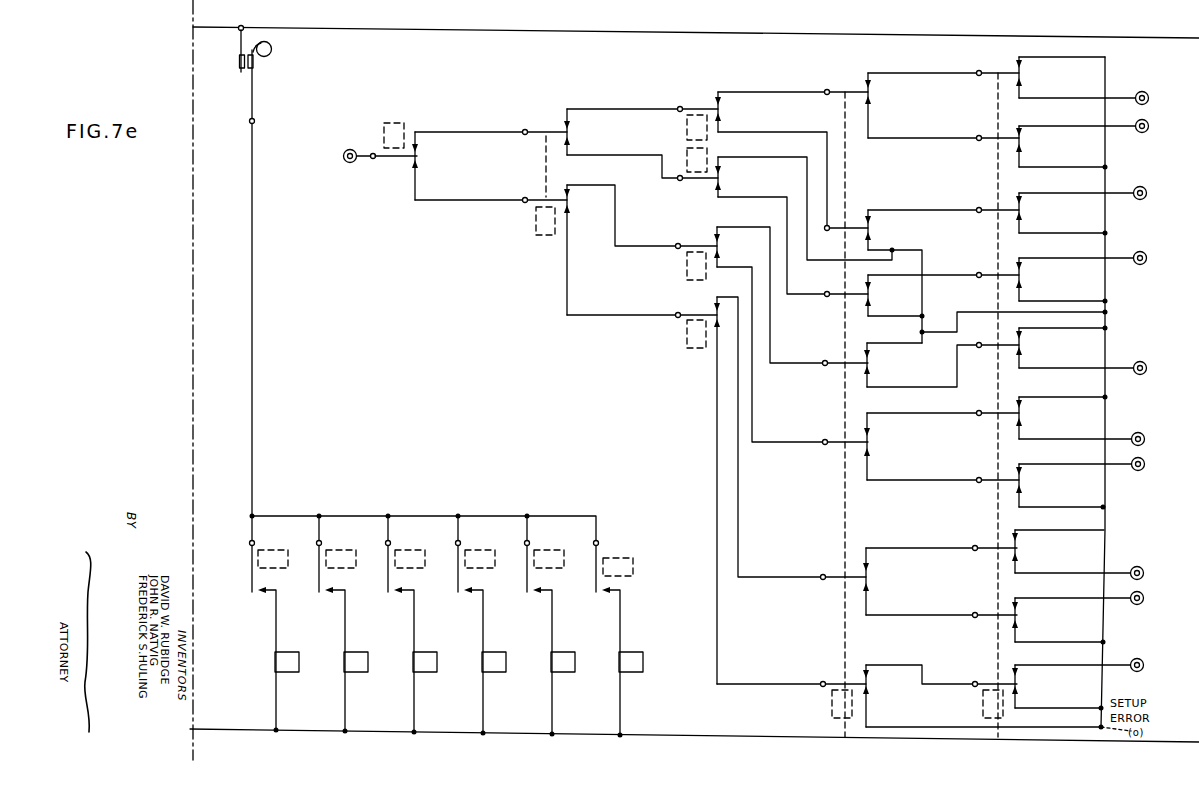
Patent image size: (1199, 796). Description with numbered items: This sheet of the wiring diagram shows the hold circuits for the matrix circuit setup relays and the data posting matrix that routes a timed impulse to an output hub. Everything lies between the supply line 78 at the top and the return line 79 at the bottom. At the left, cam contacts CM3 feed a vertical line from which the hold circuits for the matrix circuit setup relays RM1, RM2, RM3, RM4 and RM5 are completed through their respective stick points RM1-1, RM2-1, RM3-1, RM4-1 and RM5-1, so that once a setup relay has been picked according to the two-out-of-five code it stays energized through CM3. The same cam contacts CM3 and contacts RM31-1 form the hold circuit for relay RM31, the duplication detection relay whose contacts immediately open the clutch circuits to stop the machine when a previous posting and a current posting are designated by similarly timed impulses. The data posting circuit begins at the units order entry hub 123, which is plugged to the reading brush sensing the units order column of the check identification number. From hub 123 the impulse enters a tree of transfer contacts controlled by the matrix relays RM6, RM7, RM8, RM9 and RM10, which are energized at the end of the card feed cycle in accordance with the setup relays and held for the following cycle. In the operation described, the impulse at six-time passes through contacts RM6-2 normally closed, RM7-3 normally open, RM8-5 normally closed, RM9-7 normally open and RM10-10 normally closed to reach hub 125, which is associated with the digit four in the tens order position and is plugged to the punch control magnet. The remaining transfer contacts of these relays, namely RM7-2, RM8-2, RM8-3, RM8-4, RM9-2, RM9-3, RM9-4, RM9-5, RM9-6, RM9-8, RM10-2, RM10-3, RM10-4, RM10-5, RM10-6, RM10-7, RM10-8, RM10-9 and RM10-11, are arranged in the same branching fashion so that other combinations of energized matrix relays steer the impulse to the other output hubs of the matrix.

The line 78 is at (500, 29).
The line 79 is at (712, 734).
The units order entry hub 123 is at (344, 163).
The hub 125 is at (1144, 594).
The cam contacts CM3 is at (248, 71).
The matrix circuit setup relay RM1 is at (262, 552).
The relay RM1 contact RM1-1 is at (263, 596).
The matrix circuit setup relay RM2 is at (330, 552).
The relay RM2 contact RM2-1 is at (331, 596).
The matrix circuit setup relay RM3 is at (399, 552).
The relay RM3 contact RM3-1 is at (400, 596).
The matrix circuit setup relay RM4 is at (468, 552).
The relay RM4 contact RM4-1 is at (470, 596).
The matrix circuit setup relay RM5 is at (537, 552).
The relay RM5 contact RM5-1 is at (539, 596).
The relay RM31 is at (617, 559).
The relay contacts RM31-1 is at (608, 596).
The matrix relay RM6 is at (384, 136).
The relay contacts RM6-2 is at (420, 156).
The matrix relay RM7 is at (536, 224).
The relay RM7 transfer contact RM7-2 is at (571, 137).
The relay contacts RM7-3 is at (565, 209).
The matrix relay RM8 is at (687, 156).
The relay RM8 transfer contact RM8-2 is at (720, 114).
The relay RM8 transfer contact RM8-3 is at (720, 166).
The relay RM8 transfer contact RM8-4 is at (717, 248).
The relay contacts RM8-5 is at (712, 329).
The matrix relay RM9 is at (834, 704).
The relay RM9 transfer contact RM9-2 is at (871, 95).
The relay RM9 transfer contact RM9-3 is at (871, 233).
The relay RM9 transfer contact RM9-4 is at (866, 301).
The relay RM9 transfer contact RM9-5 is at (869, 367).
The relay RM9 transfer contact RM9-6 is at (869, 445).
The relay contacts RM9-7 is at (940, 582).
The relay RM9 transfer contact RM9-8 is at (867, 688).
The matrix relay RM10 is at (985, 709).
The relay RM10 transfer contact RM10-2 is at (1020, 80).
The relay RM10 transfer contact RM10-3 is at (1020, 148).
The relay RM10 transfer contact RM10-4 is at (1020, 215).
The relay RM10 transfer contact RM10-5 is at (1020, 283).
The relay RM10 transfer contact RM10-6 is at (1020, 349).
The relay RM10 transfer contact RM10-7 is at (1020, 419).
The relay RM10 transfer contact RM10-8 is at (1020, 487).
The relay RM10 transfer contact RM10-9 is at (1016, 555).
The relay contacts RM10-10 is at (1016, 624).
The relay RM10 transfer contact RM10-11 is at (1016, 689).